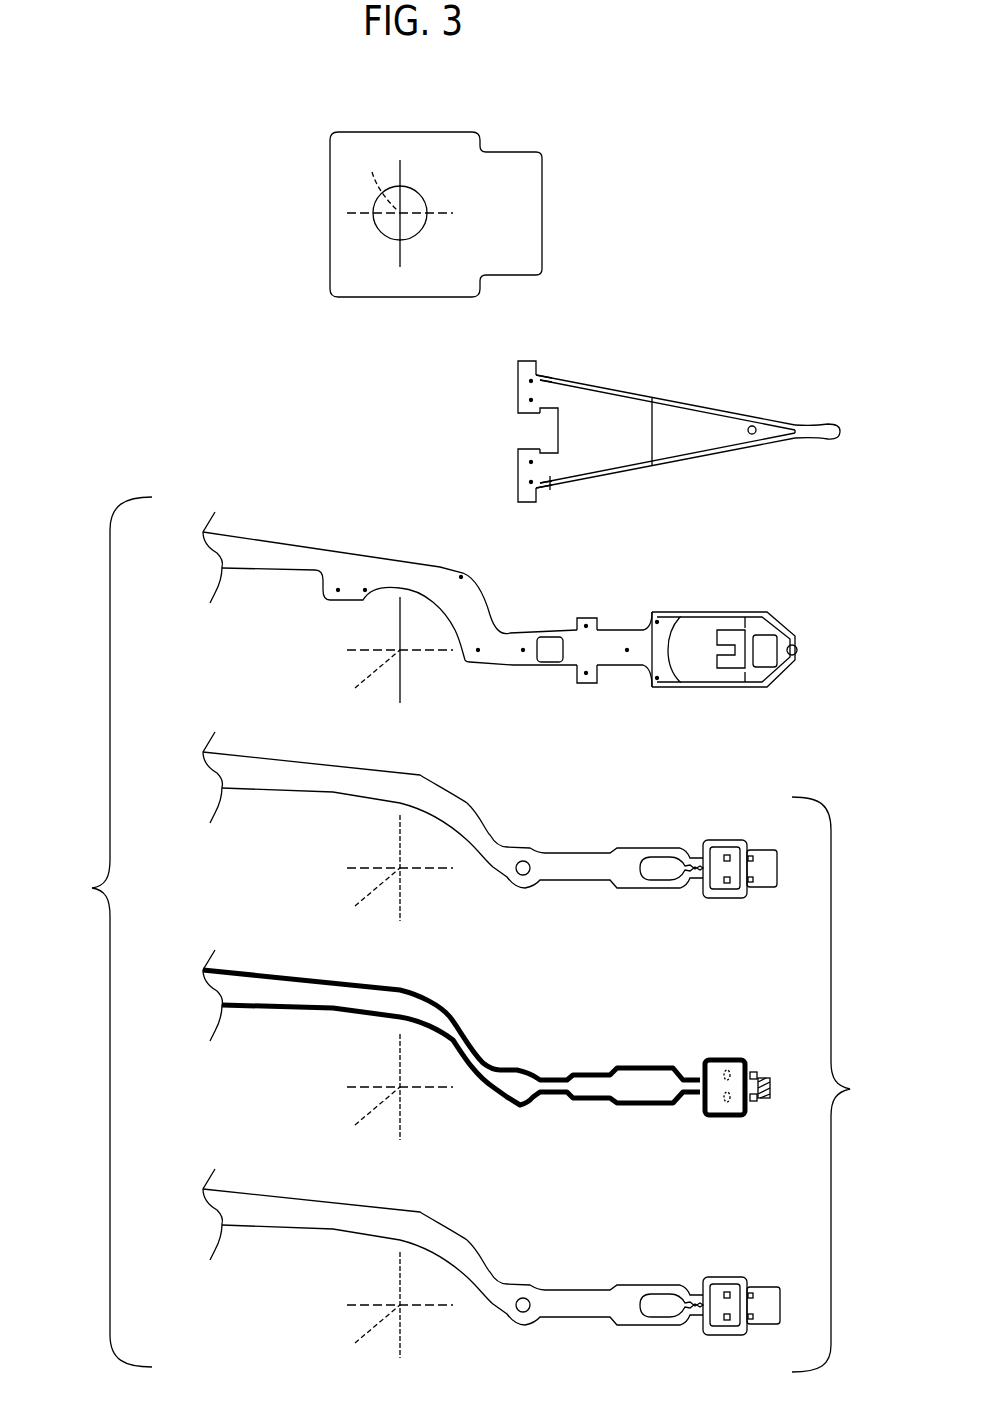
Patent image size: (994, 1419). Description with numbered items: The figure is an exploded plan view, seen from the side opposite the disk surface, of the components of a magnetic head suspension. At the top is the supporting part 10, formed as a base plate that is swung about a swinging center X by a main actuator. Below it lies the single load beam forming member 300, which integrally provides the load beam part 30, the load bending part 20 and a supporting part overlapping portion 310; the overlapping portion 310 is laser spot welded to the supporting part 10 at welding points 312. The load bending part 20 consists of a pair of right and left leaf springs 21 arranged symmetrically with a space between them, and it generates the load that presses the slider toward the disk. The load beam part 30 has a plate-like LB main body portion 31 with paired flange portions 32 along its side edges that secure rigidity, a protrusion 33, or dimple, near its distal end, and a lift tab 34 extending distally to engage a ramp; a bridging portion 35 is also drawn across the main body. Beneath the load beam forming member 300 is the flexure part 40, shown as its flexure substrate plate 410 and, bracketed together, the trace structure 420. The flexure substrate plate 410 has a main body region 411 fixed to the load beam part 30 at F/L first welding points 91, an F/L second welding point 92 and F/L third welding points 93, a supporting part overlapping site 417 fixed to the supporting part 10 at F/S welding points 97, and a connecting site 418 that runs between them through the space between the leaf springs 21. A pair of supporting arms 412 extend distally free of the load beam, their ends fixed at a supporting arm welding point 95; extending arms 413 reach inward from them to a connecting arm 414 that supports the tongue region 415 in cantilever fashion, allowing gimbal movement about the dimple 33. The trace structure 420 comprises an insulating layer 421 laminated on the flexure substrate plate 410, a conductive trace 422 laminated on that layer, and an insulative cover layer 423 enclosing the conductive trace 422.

The supporting part 10 is at (436, 158).
The load bending part 20 is at (549, 355).
The leaf springs 21 is at (553, 384).
The load beam part 30 is at (677, 390).
The LB main body portion 31 is at (618, 403).
The flange portions 32 is at (729, 418).
The protrusion 33 is at (755, 426).
The lift tab 34 is at (827, 429).
The bridge portion 35 is at (652, 433).
The load beam forming member 300 is at (653, 480).
The supporting part overlapping portion 310 is at (525, 497).
The welding points 312 is at (530, 379).
The flexure part 40 is at (88, 888).
The flexure substrate plate 410 is at (617, 692).
The main body region 411 is at (573, 657).
The supporting arms 412 is at (710, 611).
The extending arms 413 is at (748, 627).
The connecting arm 414 is at (730, 653).
The tongue region 415 is at (768, 640).
The supporting part overlapping site 417 is at (356, 556).
The connecting site 418 is at (552, 668).
The F/L first welding points 91 is at (658, 620).
The F/L second welding point 92 is at (627, 648).
The F/L third welding points 93 is at (585, 624).
The supporting arm welding point 95 is at (798, 650).
The F/S welding points 97 is at (338, 592).
The trace structure 420 is at (855, 1089).
The insulating layer 421 is at (598, 838).
The conductive trace 422 is at (600, 1060).
The insulative cover layer 423 is at (491, 1263).